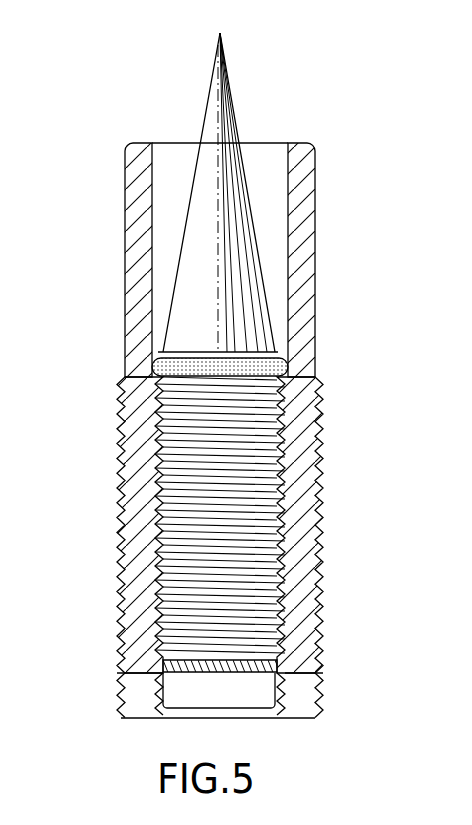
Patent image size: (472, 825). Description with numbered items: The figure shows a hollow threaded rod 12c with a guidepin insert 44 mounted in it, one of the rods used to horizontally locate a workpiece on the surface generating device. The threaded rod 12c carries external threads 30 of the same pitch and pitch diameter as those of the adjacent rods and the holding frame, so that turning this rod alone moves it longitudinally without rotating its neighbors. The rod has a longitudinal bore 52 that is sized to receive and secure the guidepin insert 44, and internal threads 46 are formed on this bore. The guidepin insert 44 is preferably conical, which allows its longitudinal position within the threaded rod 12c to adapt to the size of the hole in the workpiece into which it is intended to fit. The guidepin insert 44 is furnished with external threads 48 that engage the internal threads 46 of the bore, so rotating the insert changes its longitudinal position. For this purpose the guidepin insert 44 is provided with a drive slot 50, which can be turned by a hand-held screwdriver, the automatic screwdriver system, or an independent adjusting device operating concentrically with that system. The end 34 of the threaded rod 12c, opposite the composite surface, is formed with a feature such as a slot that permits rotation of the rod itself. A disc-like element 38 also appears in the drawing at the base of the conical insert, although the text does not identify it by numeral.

The threaded rod 12c is at (127, 268).
The threads 30 is at (118, 570).
The end 34 is at (298, 690).
The perforated disc 38 is at (153, 362).
The guidepin insert 44 is at (235, 112).
The internal threads 46 is at (172, 718).
The external threads 48 is at (281, 553).
The drive slot 50 is at (211, 697).
The longitudinal bore 52 is at (152, 183).